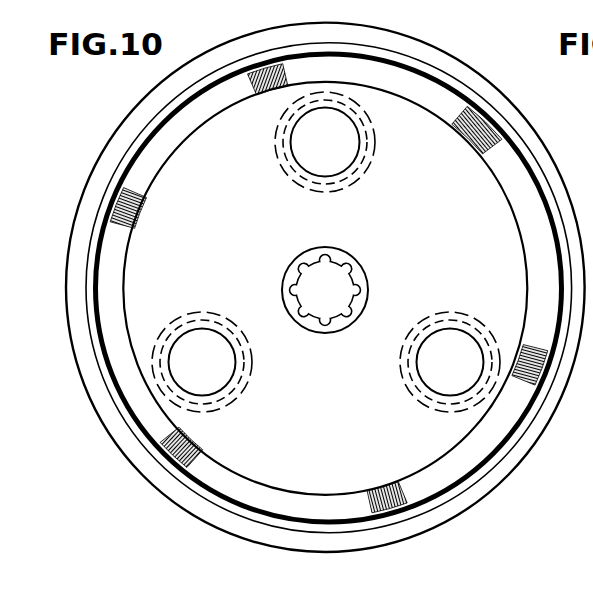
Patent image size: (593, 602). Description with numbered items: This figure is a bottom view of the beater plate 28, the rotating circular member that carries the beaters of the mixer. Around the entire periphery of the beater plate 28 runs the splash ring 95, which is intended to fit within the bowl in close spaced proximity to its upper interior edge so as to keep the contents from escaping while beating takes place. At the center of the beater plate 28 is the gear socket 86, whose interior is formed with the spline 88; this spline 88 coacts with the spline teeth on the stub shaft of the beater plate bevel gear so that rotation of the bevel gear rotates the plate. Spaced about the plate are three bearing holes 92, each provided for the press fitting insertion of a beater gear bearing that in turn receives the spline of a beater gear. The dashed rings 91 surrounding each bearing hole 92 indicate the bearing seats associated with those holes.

The beater plate 28 is at (109, 140).
The splash ring 95 is at (458, 70).
The gear socket 86 is at (283, 278).
The spline 88 is at (312, 256).
The bearing race rings 91 is at (355, 173).
The bearing holes 92 is at (355, 140).